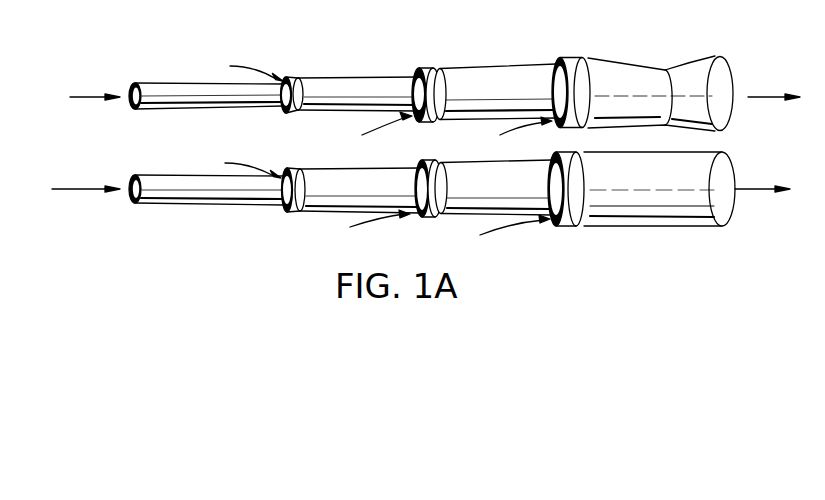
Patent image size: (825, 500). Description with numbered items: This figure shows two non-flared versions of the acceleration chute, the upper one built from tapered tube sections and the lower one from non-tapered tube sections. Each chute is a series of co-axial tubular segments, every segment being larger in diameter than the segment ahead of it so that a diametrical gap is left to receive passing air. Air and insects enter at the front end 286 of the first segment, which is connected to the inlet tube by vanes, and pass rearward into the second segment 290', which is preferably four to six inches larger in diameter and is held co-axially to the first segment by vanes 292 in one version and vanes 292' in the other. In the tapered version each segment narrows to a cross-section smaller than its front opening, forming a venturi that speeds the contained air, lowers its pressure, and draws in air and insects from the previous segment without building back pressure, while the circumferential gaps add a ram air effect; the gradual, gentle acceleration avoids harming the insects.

The front end 286 is at (190, 83).
The second segment 290' is at (501, 71).
The vanes 292 is at (397, 206).
The vanes 292' is at (412, 62).